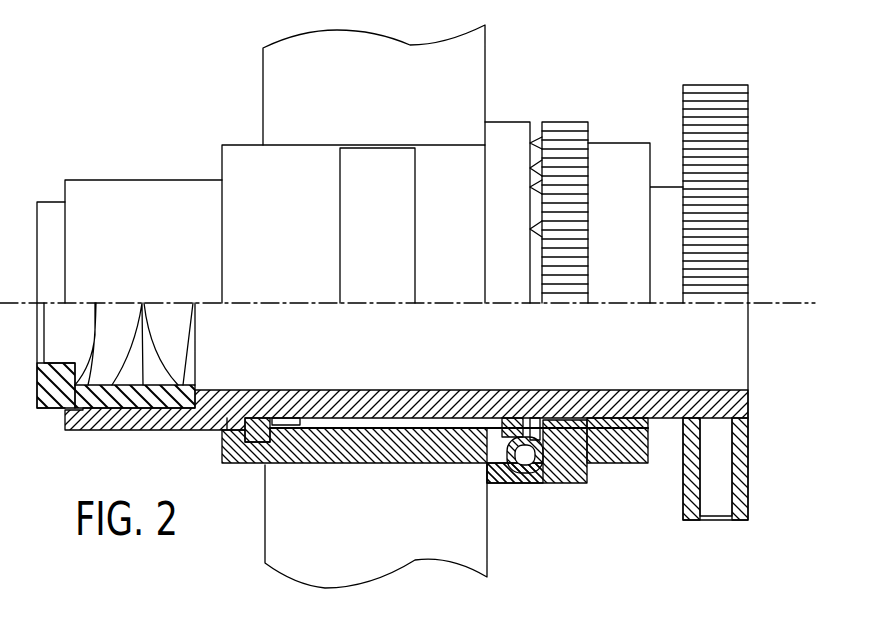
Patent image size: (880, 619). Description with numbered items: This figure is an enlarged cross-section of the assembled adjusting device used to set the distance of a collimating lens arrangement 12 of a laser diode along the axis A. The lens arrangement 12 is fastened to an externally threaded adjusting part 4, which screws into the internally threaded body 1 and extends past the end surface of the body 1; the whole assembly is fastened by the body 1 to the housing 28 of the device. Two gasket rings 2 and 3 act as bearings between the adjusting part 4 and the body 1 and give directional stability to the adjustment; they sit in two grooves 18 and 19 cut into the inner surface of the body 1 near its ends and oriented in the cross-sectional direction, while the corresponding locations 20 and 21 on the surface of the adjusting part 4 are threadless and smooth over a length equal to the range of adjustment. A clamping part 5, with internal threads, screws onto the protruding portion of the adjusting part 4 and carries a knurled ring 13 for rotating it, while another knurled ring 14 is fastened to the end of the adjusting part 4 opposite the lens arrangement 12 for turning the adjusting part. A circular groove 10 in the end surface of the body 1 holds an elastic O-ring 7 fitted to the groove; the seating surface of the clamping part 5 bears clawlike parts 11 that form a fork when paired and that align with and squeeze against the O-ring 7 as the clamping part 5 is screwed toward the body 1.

The body 1 is at (243, 144).
The gasket ring 2 is at (260, 390).
The gasket ring 3 is at (523, 417).
The adjusting part 4 is at (145, 180).
The clamping part 5 is at (618, 142).
The elastic O-ring 7 is at (563, 483).
The circular groove 10 is at (517, 473).
The clawlike parts 11 is at (538, 473).
The collimating lens arrangement 12 is at (49, 202).
The means for rotating clamping part 13 is at (563, 122).
The knurled ring 14 is at (713, 85).
The groove 18 is at (250, 442).
The groove 19 is at (483, 463).
The threadless location 20 is at (292, 418).
The threadless location 21 is at (495, 417).
The housing 28 is at (263, 77).
The axis A is at (770, 303).